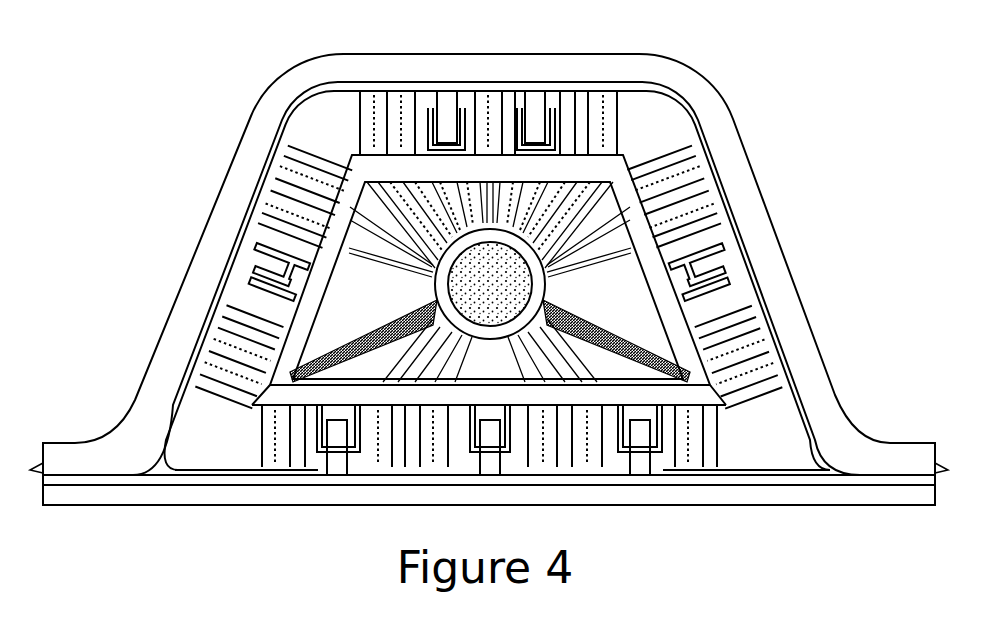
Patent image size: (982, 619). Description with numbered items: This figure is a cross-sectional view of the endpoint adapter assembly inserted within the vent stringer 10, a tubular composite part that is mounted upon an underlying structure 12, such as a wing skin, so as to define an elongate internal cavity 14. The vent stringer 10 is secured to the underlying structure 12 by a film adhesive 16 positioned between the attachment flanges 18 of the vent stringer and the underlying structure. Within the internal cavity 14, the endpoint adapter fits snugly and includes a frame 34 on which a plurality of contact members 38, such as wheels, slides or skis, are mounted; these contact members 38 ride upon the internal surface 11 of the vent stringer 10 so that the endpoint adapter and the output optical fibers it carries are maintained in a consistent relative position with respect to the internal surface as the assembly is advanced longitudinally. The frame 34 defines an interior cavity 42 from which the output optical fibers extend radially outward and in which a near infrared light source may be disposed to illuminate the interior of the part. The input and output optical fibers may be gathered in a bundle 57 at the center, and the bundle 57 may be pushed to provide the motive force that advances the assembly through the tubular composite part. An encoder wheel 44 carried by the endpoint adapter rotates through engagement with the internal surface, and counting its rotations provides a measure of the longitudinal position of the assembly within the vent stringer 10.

The vent stringer 10 is at (730, 213).
The internal surface 11 is at (628, 90).
The underlying structure 12 is at (915, 498).
The internal cavity 14 is at (775, 398).
The film adhesive 16 is at (72, 478).
The attachment flanges 18 is at (208, 470).
The frame 34 is at (615, 170).
The contact members 38 is at (532, 100).
The interior cavity 42 is at (637, 293).
The wheel 44 is at (488, 478).
The bundle 57 is at (527, 283).